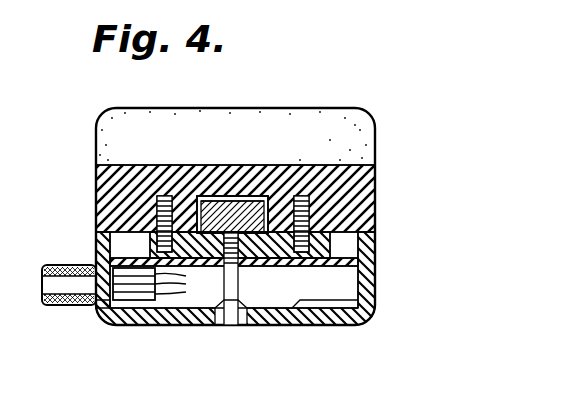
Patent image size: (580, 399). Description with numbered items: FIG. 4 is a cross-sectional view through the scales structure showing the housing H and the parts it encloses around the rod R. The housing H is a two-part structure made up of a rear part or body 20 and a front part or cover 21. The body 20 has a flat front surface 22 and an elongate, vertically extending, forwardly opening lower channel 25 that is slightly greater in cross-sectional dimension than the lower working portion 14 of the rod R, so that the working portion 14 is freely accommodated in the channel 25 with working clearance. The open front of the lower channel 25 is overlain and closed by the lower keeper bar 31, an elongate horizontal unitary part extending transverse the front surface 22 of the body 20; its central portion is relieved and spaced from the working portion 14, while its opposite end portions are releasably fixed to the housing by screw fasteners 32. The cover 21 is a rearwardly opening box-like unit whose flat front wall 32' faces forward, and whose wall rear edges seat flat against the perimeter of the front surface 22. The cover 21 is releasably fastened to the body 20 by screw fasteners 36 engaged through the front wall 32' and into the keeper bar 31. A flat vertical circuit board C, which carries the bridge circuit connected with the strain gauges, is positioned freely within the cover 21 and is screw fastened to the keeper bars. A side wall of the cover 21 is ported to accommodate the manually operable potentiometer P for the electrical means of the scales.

The housing H is at (92, 165).
The rod R is at (207, 196).
The lower working portion 14 is at (272, 192).
The body 20 is at (376, 167).
The cover 21 is at (376, 288).
The flat front surface 22 is at (96, 235).
The lower channel 25 is at (254, 194).
The lower keeper bar 31 is at (376, 241).
The screw fasteners 32 is at (221, 224).
The front wall 32' is at (321, 336).
The screw fasteners 36 is at (231, 326).
The potentiometer P is at (42, 291).
The circuit board C is at (190, 268).